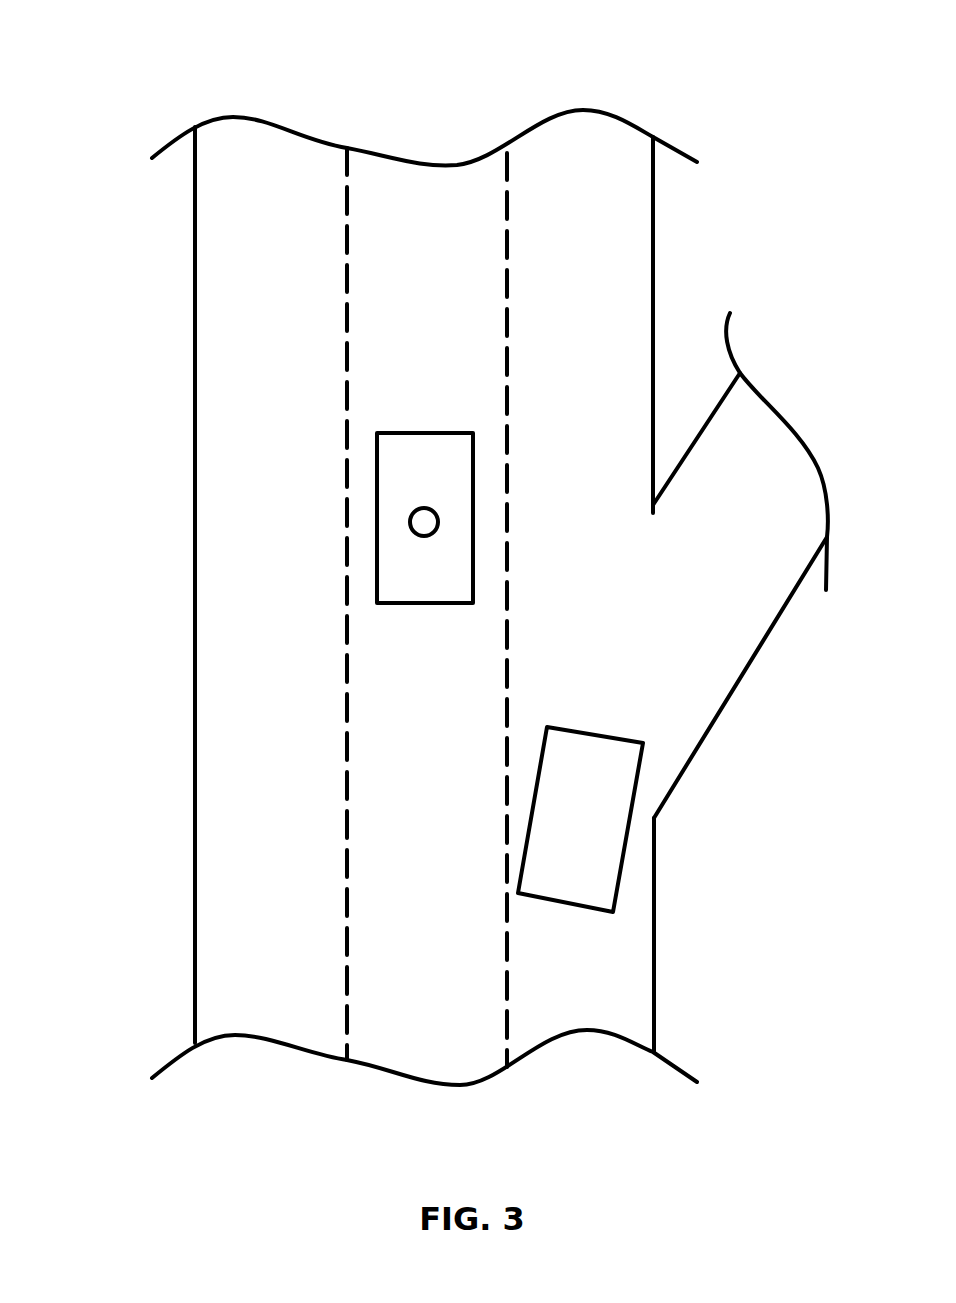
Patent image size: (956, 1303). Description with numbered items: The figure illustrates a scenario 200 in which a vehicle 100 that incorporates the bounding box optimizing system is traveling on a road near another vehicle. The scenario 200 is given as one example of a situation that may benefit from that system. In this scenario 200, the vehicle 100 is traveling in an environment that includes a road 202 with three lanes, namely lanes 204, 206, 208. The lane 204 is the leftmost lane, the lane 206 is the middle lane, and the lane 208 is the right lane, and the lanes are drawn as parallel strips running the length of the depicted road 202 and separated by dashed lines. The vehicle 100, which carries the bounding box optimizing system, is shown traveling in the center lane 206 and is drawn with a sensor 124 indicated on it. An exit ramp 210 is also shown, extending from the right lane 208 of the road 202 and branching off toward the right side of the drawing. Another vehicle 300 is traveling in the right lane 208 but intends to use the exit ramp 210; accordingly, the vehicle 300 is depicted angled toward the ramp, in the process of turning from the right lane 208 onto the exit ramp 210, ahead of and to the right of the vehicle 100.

The scenario 200 is at (729, 201).
The road 202 is at (195, 211).
The lane 204 is at (242, 283).
The lane 206 is at (427, 215).
The lane 208 is at (613, 290).
The exit ramp 210 is at (748, 577).
The vehicle 100 is at (377, 475).
The sensor 124 is at (409, 524).
The vehicle 300 is at (628, 840).